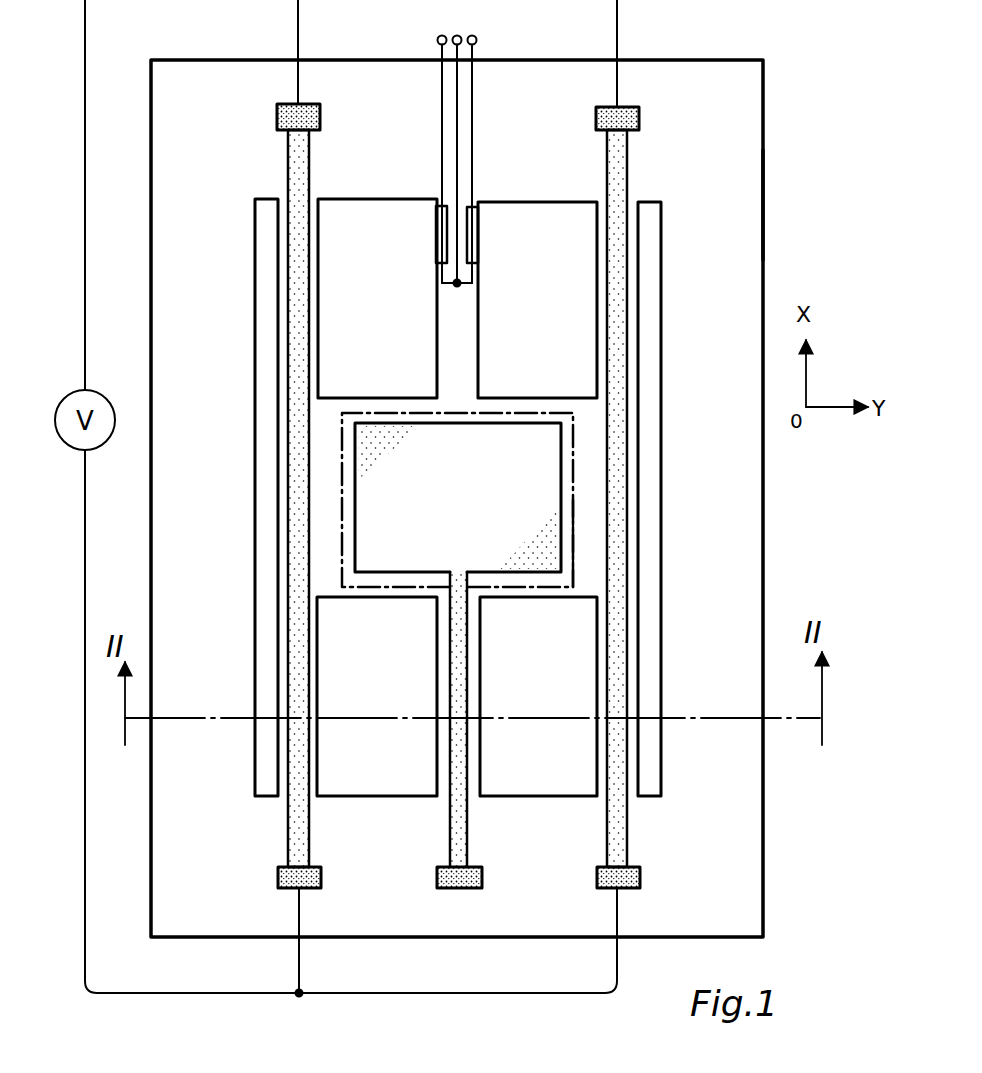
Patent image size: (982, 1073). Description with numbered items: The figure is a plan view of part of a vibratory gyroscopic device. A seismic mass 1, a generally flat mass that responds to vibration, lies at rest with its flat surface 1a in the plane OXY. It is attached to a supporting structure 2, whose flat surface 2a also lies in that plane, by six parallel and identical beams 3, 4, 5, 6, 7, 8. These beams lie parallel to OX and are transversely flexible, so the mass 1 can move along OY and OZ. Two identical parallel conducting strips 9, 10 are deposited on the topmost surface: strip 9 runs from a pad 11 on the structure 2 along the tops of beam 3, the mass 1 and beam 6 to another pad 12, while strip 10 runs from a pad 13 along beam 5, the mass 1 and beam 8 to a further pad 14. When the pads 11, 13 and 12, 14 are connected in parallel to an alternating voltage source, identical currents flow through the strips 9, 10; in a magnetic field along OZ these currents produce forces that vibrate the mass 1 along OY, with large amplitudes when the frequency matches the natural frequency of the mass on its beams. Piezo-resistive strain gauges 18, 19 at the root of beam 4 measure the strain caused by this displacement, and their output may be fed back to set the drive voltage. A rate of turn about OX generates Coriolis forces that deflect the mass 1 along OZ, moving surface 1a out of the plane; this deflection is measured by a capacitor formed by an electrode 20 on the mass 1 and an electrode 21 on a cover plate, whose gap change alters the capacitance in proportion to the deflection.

The seismic mass 1 is at (449, 460).
The flat surface 1a is at (588, 546).
The supporting structure 2 is at (784, 104).
The flat surface 2a is at (748, 205).
The beam 3 is at (320, 318).
The beam 4 is at (462, 328).
The beam 5 is at (640, 322).
The beam 6 is at (280, 660).
The beam 7 is at (448, 655).
The beam 8 is at (600, 653).
The conducting strip 9 is at (296, 168).
The conducting strip 10 is at (622, 176).
The pad 11 is at (278, 120).
The pad 12 is at (278, 878).
The pad 13 is at (638, 118).
The pad 14 is at (640, 880).
The piezo-resistive strain gauge 18 is at (436, 230).
The piezo-resistive strain gauge 19 is at (478, 240).
The electrode 20 is at (452, 481).
The electrode 21 is at (340, 489).